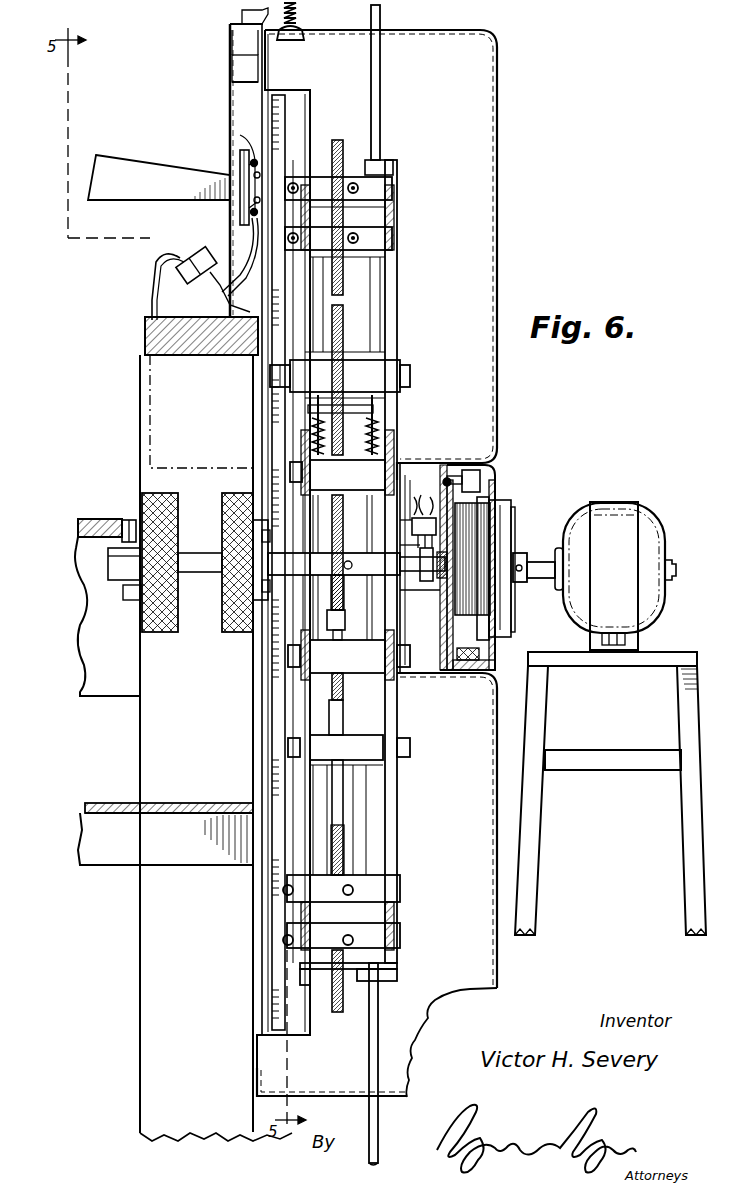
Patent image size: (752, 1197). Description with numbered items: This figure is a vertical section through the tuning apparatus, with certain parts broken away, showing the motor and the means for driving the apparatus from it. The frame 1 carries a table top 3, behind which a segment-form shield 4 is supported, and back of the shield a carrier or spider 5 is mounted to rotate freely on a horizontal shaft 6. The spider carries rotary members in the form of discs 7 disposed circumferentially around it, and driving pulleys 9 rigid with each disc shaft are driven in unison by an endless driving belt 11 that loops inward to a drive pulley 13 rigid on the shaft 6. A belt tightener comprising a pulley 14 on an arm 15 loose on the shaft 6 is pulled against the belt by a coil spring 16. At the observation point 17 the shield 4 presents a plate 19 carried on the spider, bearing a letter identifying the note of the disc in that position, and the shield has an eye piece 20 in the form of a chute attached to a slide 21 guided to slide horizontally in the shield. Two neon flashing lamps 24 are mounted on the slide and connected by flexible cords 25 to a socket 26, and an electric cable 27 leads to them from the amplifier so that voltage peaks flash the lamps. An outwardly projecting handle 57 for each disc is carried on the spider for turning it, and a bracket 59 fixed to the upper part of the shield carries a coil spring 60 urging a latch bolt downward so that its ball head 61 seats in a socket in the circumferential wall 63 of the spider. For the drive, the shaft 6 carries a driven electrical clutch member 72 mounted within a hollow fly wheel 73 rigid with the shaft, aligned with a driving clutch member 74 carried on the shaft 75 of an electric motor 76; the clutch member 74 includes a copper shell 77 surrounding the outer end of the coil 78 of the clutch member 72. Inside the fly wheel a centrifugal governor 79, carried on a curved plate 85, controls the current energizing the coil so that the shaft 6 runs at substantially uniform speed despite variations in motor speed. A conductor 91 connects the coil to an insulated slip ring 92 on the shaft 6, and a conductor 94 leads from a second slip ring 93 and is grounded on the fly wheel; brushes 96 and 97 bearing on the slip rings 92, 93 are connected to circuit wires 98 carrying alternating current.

The frame 1 is at (140, 991).
The table top 3 is at (88, 517).
The segment-form shield 4 is at (230, 37).
The carrier or spider 5 is at (393, 170).
The horizontal shaft 6 is at (400, 580).
The discs 7 is at (288, 132).
The driving pulleys 9 is at (343, 152).
The endless driving belt 11 is at (344, 300).
The drive pulley 13 is at (343, 608).
The pulley 14 is at (373, 408).
The arm 15 is at (375, 428).
The coil spring 16 is at (380, 444).
The observation point 17 is at (228, 78).
The plate 19 is at (322, 92).
The eye piece 20 is at (160, 148).
The slide 21 is at (240, 172).
The flashing lamps 24 is at (240, 135).
The flexible conductors or cords 25 is at (246, 252).
The socket 26 is at (200, 264).
The electric cable 27 is at (168, 358).
The handle 57 is at (381, 55).
The bracket 59 is at (243, 14).
The coil spring 60 is at (297, 13).
The ball head 61 is at (302, 34).
The circumferential wall 63 is at (498, 75).
The electrical clutch member 72 is at (456, 596).
The hollow fly wheel 73 is at (470, 642).
The driving clutch member 74 is at (505, 518).
The motor shaft 75 is at (546, 560).
The electric motor 76 is at (619, 576).
The copper shell 77 is at (488, 500).
The coil 78 is at (512, 530).
The centrifugal governor 79 is at (490, 465).
The curved plate 85 is at (470, 470).
The conductor 91 is at (452, 465).
The insulated slip ring 92 is at (440, 595).
The second slip ring 93 is at (395, 578).
The conductor 94 is at (447, 476).
The brush 96 is at (385, 558).
The brush 97 is at (415, 560).
The circuit wires 98 is at (420, 500).